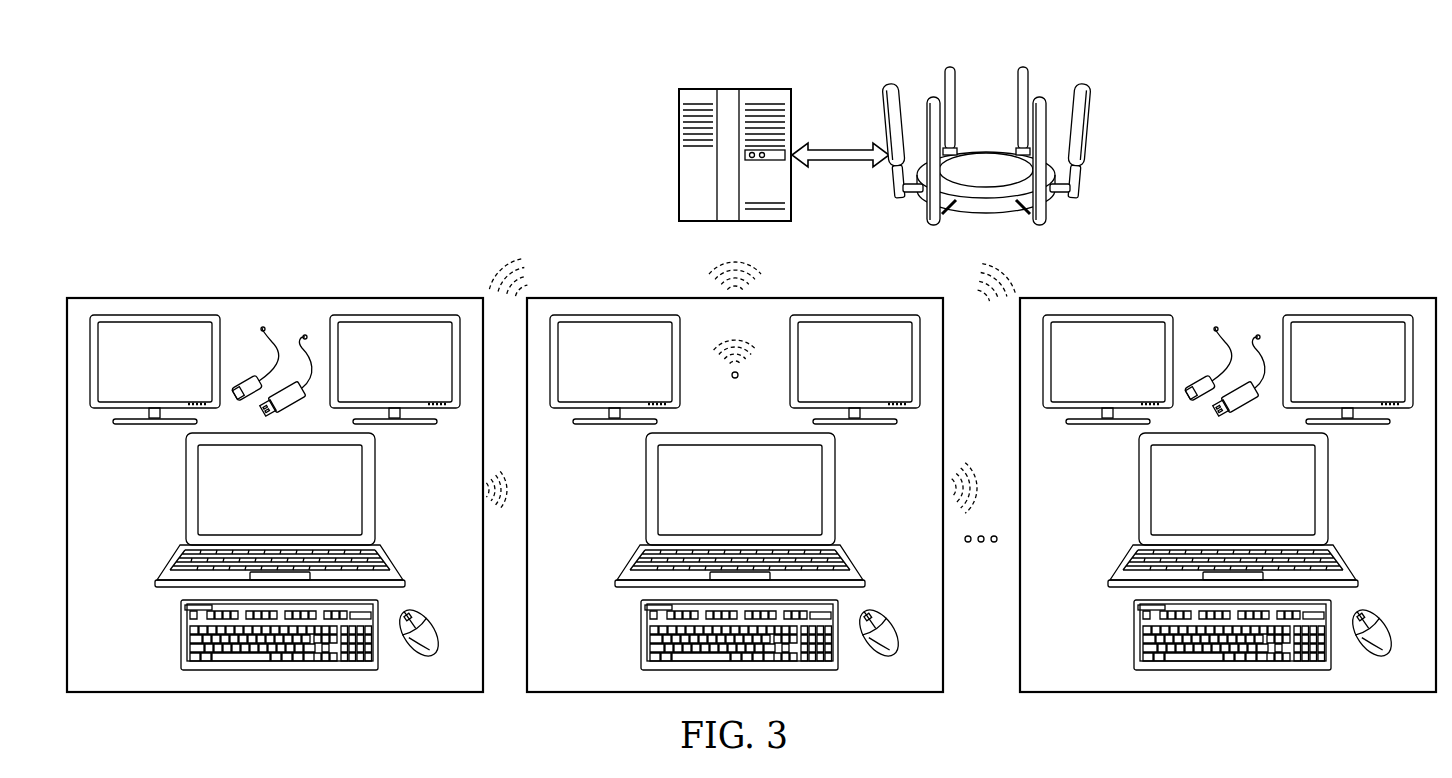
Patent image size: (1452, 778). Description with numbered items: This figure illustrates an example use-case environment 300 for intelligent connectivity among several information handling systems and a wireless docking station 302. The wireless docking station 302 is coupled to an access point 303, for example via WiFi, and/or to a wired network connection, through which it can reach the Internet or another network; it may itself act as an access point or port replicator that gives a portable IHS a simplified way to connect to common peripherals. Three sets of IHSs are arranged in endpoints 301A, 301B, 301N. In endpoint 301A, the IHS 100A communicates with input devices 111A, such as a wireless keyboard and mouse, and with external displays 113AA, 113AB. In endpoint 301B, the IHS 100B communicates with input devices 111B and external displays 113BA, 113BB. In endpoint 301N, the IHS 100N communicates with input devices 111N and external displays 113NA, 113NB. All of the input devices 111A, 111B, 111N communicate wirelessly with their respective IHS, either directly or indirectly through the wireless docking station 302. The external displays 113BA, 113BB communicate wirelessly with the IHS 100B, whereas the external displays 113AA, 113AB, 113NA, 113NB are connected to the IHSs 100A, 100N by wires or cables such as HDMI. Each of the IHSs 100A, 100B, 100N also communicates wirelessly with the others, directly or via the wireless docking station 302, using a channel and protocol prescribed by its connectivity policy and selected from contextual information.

The environment 300 is at (445, 72).
The endpoint 301A is at (232, 294).
The endpoint 301B is at (622, 294).
The endpoint 301N is at (1324, 292).
The wireless docking station 302 is at (676, 140).
The access point 303 is at (1090, 131).
The external display 113AA is at (117, 378).
The external display 113AB is at (357, 378).
The external display 113BA is at (615, 369).
The external display 113BB is at (855, 369).
The external display 113NA is at (1108, 369).
The external display 113NB is at (1348, 369).
The IHS 100A is at (252, 504).
The IHS 100B is at (740, 510).
The IHS 100N is at (1233, 510).
The input devices 111A is at (167, 598).
The input devices 111B is at (728, 635).
The input devices 111N is at (1221, 635).